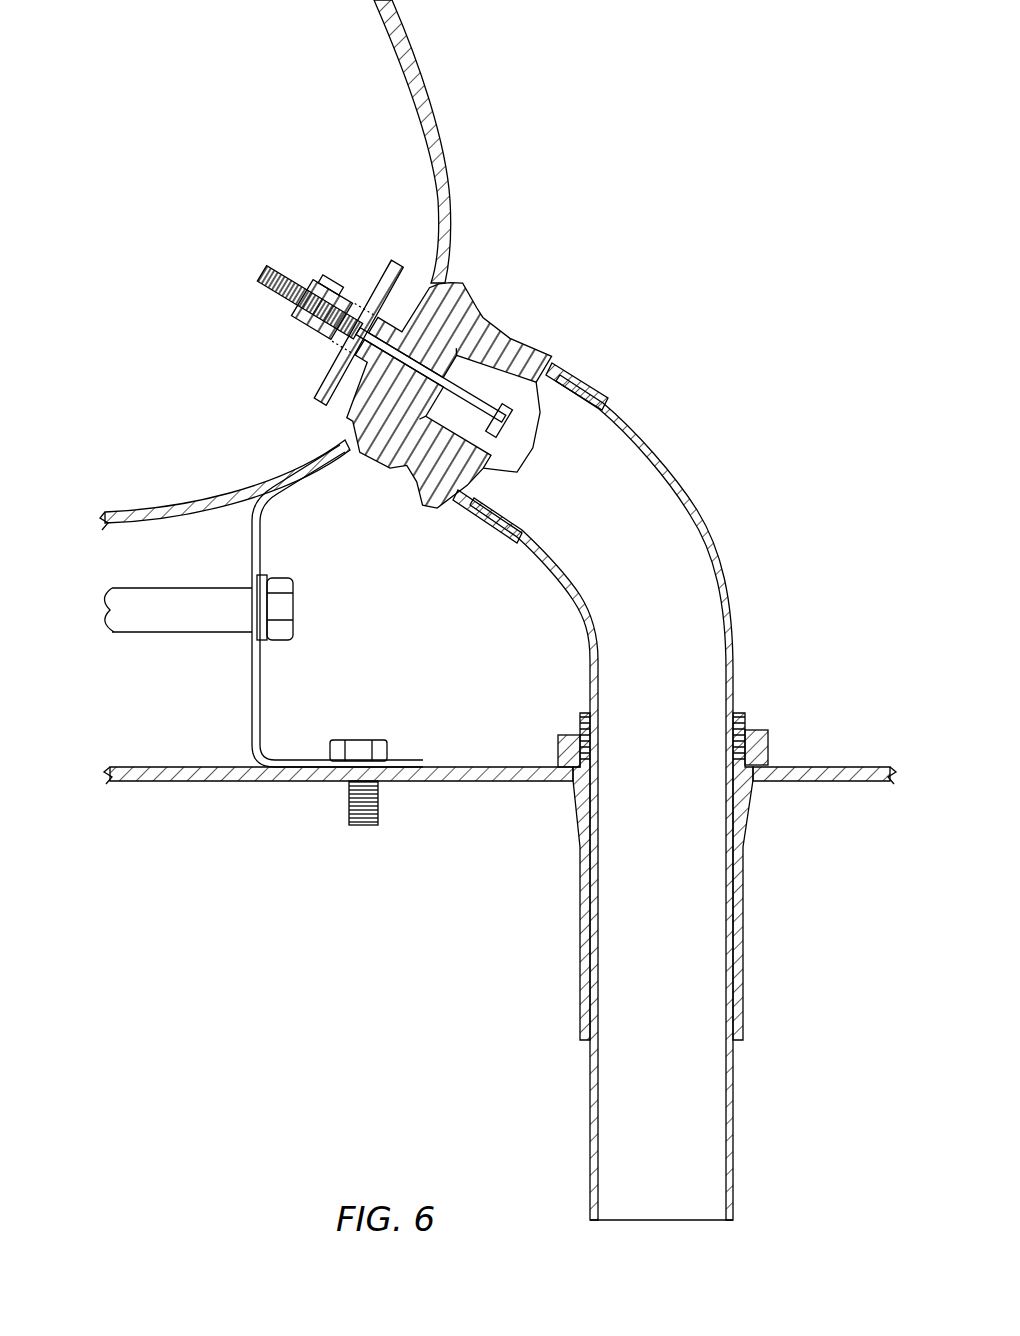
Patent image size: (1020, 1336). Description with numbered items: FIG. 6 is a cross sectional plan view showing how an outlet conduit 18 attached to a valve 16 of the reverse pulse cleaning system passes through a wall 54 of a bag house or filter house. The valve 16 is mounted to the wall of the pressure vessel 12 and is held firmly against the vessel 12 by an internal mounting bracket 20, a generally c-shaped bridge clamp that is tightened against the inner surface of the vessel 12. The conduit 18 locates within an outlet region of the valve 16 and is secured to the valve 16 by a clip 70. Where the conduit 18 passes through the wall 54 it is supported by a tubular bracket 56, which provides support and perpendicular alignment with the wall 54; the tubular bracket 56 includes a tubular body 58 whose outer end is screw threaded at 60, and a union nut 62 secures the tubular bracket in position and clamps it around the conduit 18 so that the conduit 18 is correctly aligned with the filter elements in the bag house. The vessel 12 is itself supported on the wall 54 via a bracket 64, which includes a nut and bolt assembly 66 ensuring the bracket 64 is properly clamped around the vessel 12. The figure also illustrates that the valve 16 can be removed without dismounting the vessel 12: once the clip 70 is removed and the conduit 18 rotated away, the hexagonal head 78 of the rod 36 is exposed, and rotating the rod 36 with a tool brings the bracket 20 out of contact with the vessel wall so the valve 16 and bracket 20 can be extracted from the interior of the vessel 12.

The pressure vessel 12 is at (423, 87).
The valve 16 is at (500, 258).
The outlet conduit 18 is at (698, 525).
The internal mounting bracket 20 is at (333, 288).
The rod 36 is at (292, 291).
The wall 54 is at (478, 767).
The tubular bracket 56 is at (764, 706).
The tubular body 58 is at (743, 923).
The screw thread 60 is at (580, 737).
The union nut 62 is at (770, 757).
The bracket 64 is at (258, 712).
The nut and bolt assembly 66 is at (167, 617).
The clip 70 is at (557, 348).
The hexagonal head 78 is at (547, 437).